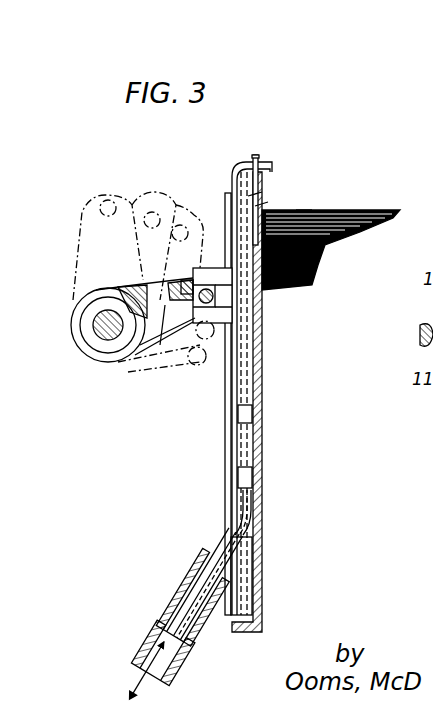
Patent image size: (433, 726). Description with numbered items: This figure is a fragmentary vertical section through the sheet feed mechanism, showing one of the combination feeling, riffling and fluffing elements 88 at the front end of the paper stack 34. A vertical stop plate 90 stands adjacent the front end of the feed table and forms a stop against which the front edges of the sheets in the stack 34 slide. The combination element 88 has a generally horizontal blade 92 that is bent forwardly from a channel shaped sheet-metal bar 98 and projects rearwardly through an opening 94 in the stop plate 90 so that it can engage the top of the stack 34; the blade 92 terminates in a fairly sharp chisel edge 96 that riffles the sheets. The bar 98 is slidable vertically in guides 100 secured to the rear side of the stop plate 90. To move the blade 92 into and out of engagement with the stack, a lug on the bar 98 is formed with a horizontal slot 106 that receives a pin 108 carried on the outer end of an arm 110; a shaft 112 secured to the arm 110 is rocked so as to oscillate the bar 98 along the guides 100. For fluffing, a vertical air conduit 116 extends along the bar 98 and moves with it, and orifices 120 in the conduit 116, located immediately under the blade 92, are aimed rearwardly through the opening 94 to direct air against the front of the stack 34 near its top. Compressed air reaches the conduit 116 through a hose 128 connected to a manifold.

The stack 34 is at (372, 210).
The combination feeling, riffling and fluffing element 88 is at (232, 166).
The stop plate 90 is at (258, 452).
The blade 92 is at (258, 162).
The opening 94 is at (304, 210).
The chisel edge 96 is at (260, 176).
The channel shaped sheet-metal bar 98 is at (238, 432).
The guide 100 is at (228, 448).
The horizontal slot 106 is at (160, 345).
The pin 108 is at (208, 297).
The arm 110 is at (150, 287).
The shaft 112 is at (97, 335).
The air conduit 116 is at (257, 300).
The orifice 120 is at (262, 205).
The hose 128 is at (157, 620).